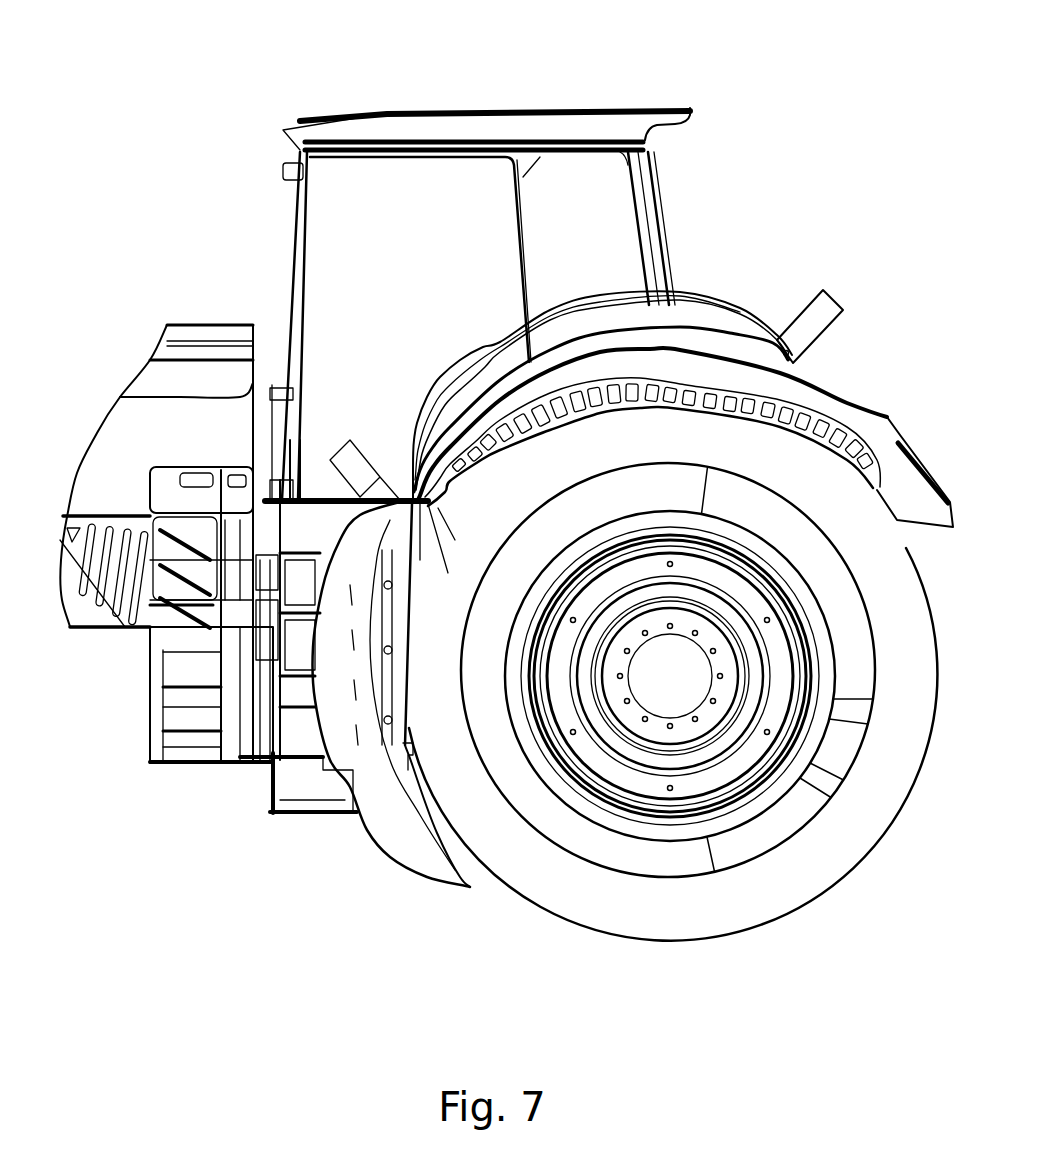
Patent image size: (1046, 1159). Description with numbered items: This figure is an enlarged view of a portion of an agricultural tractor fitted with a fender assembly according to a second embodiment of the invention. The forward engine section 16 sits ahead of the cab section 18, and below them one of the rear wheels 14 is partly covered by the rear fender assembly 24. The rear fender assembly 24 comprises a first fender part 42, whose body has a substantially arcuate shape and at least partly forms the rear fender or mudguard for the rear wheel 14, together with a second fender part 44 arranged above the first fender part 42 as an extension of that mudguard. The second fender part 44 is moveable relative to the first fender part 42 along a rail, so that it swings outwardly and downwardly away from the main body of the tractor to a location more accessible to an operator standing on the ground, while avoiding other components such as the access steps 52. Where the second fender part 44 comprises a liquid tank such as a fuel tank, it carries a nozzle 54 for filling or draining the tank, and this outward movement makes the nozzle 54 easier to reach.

The rear wheels 14 is at (797, 883).
The forward engine section 16 is at (152, 375).
The cab section 18 is at (583, 186).
The rear fender assembly 24 is at (725, 345).
The first fender part 42 is at (830, 403).
The second fender part 44 is at (668, 318).
The access steps 52 is at (280, 787).
The nozzle 54 is at (825, 290).